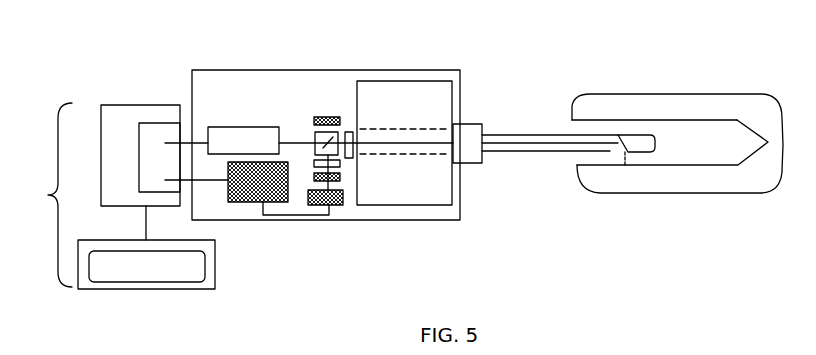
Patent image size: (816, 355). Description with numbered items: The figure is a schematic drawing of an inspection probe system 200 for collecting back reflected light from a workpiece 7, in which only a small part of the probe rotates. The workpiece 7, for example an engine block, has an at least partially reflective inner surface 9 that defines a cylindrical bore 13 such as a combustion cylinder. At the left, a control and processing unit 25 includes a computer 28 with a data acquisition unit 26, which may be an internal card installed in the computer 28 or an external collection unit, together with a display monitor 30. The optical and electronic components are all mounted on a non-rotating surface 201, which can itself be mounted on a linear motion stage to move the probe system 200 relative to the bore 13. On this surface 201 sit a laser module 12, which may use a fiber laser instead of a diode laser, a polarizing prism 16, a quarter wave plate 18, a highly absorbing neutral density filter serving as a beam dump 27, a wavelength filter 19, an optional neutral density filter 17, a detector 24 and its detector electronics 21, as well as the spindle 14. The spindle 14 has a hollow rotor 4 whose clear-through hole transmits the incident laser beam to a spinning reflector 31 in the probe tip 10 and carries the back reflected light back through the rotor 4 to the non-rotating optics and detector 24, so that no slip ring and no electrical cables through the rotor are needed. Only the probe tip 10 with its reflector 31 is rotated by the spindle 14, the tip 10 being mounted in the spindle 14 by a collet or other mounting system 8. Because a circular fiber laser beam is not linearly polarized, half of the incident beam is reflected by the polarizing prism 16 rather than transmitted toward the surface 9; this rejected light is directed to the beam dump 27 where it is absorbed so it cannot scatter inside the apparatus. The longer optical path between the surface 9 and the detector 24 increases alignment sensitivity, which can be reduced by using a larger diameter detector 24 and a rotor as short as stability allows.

The hollow rotor 4 is at (425, 157).
The workpiece 7 is at (762, 117).
The mounting system 8 is at (473, 170).
The inner surface 9 is at (673, 117).
The probe tip 10 is at (552, 134).
The laser module 12 is at (253, 127).
The bore 13 is at (695, 153).
The spindle 14 is at (403, 107).
The polarizing prism 16 is at (313, 135).
The neutral density filter 17 is at (344, 180).
The quarter wave plate 18 is at (348, 132).
The wavelength filter 19 is at (344, 163).
The detector electronics 21 is at (247, 203).
The detector 24 is at (317, 205).
The control and processing unit 25 is at (39, 195).
The data acquisition unit 26 is at (156, 147).
The beam dump 27 is at (327, 116).
The computer 28 is at (122, 116).
The display monitor 30 is at (146, 264).
The reflector 31 is at (630, 143).
The probe system 200 is at (498, 88).
The non-rotating surface 201 is at (243, 70).